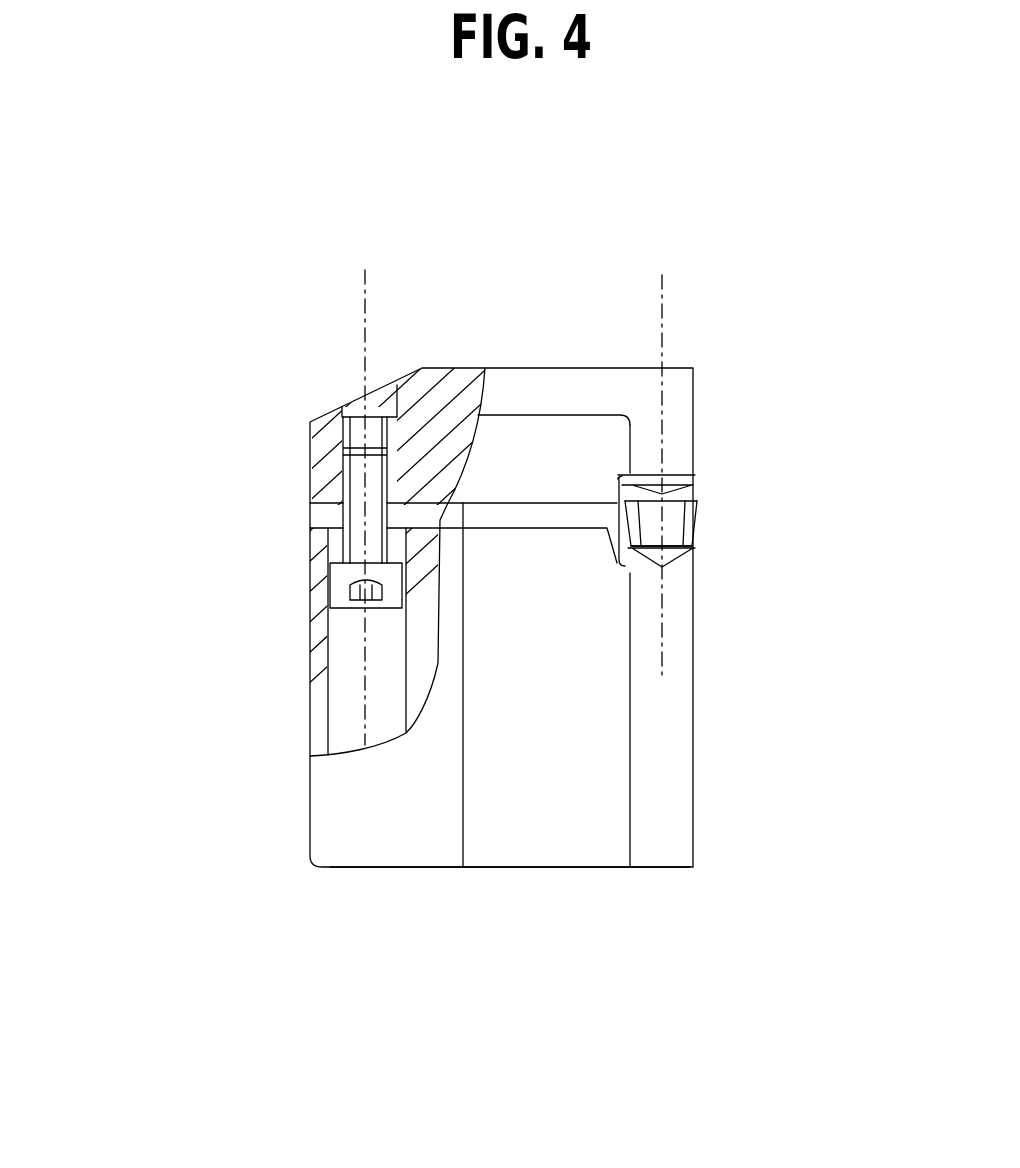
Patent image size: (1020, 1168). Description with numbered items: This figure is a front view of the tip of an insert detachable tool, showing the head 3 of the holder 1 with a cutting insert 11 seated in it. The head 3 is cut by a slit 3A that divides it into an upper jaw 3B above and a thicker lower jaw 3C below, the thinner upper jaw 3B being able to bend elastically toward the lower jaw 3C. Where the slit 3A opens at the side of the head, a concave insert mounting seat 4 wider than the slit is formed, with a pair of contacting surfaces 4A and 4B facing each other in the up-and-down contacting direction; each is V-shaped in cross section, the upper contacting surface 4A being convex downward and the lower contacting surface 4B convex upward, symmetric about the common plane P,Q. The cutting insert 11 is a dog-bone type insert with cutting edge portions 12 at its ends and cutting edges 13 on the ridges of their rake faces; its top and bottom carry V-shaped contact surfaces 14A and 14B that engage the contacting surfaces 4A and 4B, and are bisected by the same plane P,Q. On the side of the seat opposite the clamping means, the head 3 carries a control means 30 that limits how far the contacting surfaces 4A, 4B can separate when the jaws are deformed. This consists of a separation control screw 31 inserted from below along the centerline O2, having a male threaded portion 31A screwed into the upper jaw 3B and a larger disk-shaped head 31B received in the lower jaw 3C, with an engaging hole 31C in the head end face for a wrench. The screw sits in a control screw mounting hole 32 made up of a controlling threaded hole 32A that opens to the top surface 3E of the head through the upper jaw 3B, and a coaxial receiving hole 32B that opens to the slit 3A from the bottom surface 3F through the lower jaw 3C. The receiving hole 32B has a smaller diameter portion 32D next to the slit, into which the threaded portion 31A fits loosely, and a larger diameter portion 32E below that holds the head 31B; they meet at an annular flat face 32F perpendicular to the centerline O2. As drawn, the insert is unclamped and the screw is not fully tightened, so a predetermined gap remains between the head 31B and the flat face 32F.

The holder 1 is at (312, 338).
The head 3 is at (501, 617).
The slit 3A is at (325, 512).
The upper jaw 3B is at (678, 410).
The lower jaw 3C is at (665, 763).
The top surface of the head 3E is at (482, 368).
The bottom surface of the head 3F is at (545, 870).
The insert mounting seat 4 is at (610, 580).
The contacting surface 4A is at (698, 500).
The contacting surface 4B is at (696, 552).
The cutting insert 11 is at (713, 540).
The cutting edge portion 12 is at (598, 468).
The cutting edge 13 is at (655, 472).
The contact surface 14A is at (697, 470).
The contact surface 14B is at (673, 567).
The control means 30 is at (295, 488).
The separation control screw 31 is at (112, 572).
The male threaded portion 31A is at (340, 545).
The head 31B is at (332, 578).
The engaging hole 31C is at (355, 612).
The control screw mounting hole 32 is at (330, 599).
The controlling threaded hole 32A is at (320, 418).
The receiving hole 32B is at (318, 708).
The smaller diameter portion 32D is at (400, 537).
The larger diameter portion 32E is at (418, 680).
The annular flat face 32F is at (402, 590).
The centerline O2 is at (365, 480).
The planes of symmetry P,Q is at (662, 292).